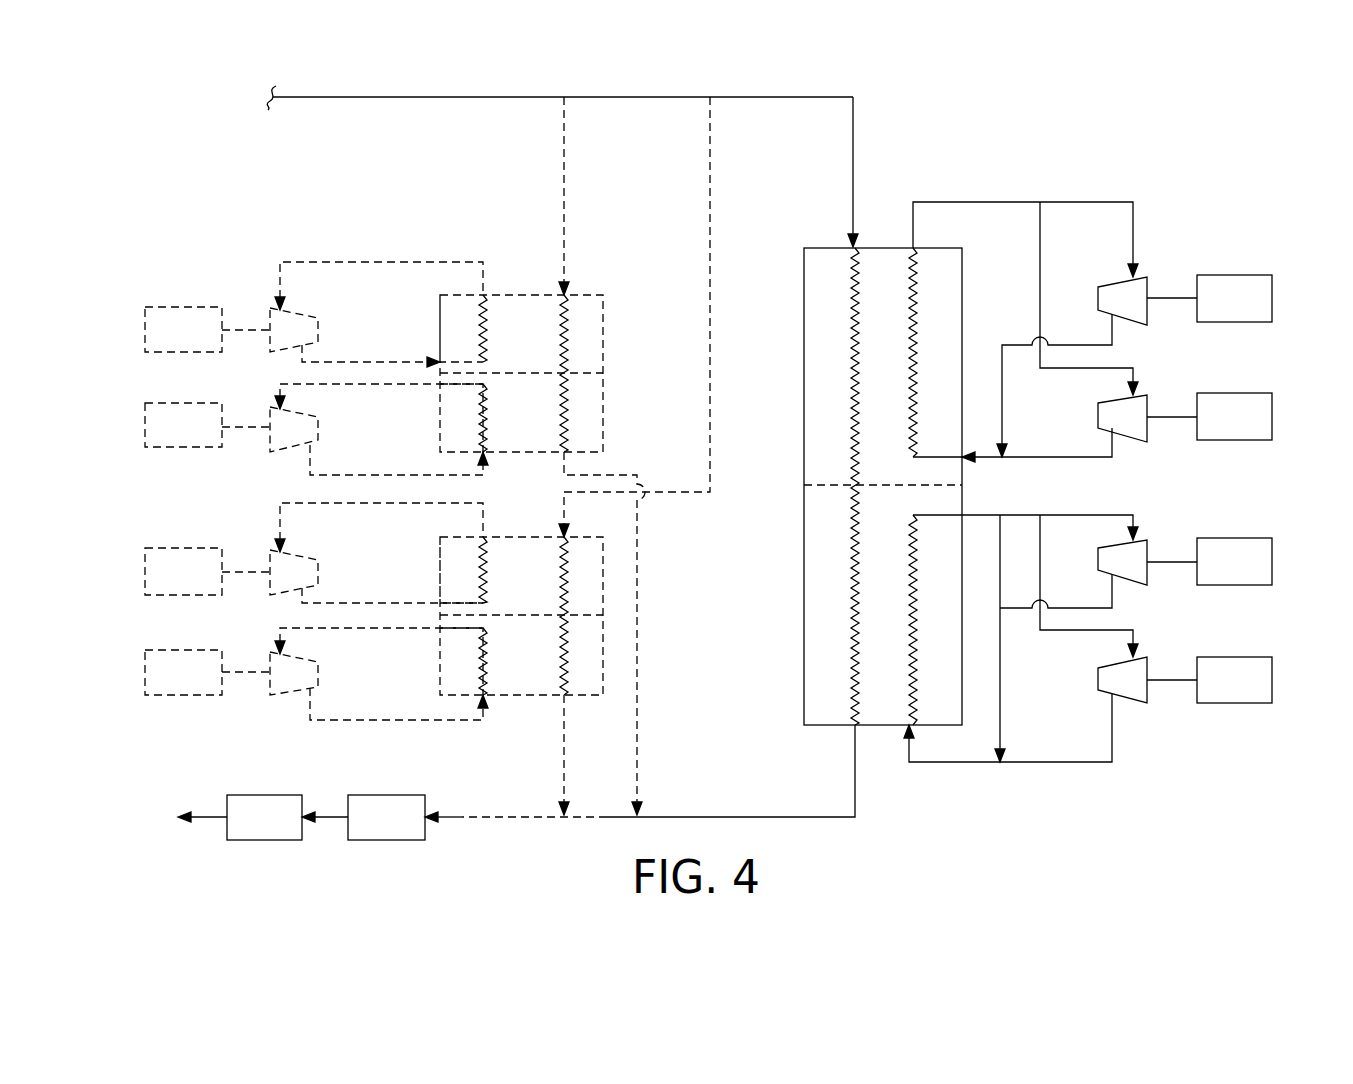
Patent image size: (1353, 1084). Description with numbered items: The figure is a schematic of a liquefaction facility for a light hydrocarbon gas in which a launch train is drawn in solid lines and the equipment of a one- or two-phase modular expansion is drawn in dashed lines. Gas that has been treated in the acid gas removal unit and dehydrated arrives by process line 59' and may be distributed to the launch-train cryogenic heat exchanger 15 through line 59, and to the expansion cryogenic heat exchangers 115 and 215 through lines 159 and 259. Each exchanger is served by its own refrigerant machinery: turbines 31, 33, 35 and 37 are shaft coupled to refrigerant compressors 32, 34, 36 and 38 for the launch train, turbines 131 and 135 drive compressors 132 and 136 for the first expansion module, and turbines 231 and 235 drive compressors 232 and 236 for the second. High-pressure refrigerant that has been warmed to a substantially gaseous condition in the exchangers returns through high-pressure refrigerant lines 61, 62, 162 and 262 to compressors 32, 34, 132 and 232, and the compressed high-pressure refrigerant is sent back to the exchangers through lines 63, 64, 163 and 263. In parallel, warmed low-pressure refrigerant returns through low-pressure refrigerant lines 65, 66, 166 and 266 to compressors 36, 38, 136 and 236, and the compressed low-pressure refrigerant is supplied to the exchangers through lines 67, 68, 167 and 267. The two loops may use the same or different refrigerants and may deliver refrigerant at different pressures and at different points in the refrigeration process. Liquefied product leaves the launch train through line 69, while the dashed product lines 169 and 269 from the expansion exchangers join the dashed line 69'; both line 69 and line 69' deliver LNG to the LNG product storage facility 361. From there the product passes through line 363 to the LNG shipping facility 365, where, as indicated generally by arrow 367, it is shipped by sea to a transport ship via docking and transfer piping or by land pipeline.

The cryogenic heat exchanger 15 is at (803, 568).
The turbine 31 is at (1272, 298).
The refrigerant compressor 32 is at (1130, 320).
The turbine 33 is at (1272, 417).
The refrigerant compressor 34 is at (1147, 440).
The turbine 35 is at (1272, 562).
The refrigerant compressor 36 is at (1140, 583).
The turbine 37 is at (1272, 680).
The refrigerant compressor 38 is at (1147, 700).
The line 59 is at (883, 172).
The process line 59' is at (560, 118).
The high-pressure refrigerant line 61 is at (1040, 257).
The high-pressure refrigerant line 62 is at (1133, 240).
The line 63 is at (1002, 405).
The line 64 is at (1065, 457).
The low-pressure refrigerant line 65 is at (1040, 547).
The low-pressure refrigerant line 66 is at (1115, 515).
The line 67 is at (1000, 705).
The line 68 is at (1090, 762).
The line 69 is at (763, 771).
The line 69' is at (516, 793).
The cryogenic heat exchanger 115 is at (603, 295).
The turbine 131 is at (145, 330).
The refrigerant compressor 132 is at (270, 350).
The turbine 135 is at (145, 427).
The refrigerant compressor 136 is at (270, 450).
The line 159 is at (564, 155).
The high-pressure refrigerant line 162 is at (333, 262).
The line 163 is at (345, 362).
The low-pressure refrigerant line 166 is at (333, 384).
The line 167 is at (345, 475).
The working fluid return branch line 169 is at (637, 773).
The cryogenic heat exchanger 215 is at (582, 697).
The turbine 231 is at (145, 572).
The refrigerant compressor 232 is at (270, 592).
The turbine 235 is at (145, 672).
The refrigerant compressor 236 is at (270, 693).
The line 259 is at (710, 158).
The high-pressure refrigerant line 262 is at (333, 503).
The line 263 is at (345, 603).
The low-pressure refrigerant line 266 is at (333, 628).
The line 267 is at (345, 720).
The working fluid return branch line 269 is at (562, 742).
The LNG product storage facility 361 is at (383, 840).
The line 363 is at (330, 818).
The LNG shipping facility 365 is at (253, 840).
The arrow 367 is at (215, 818).